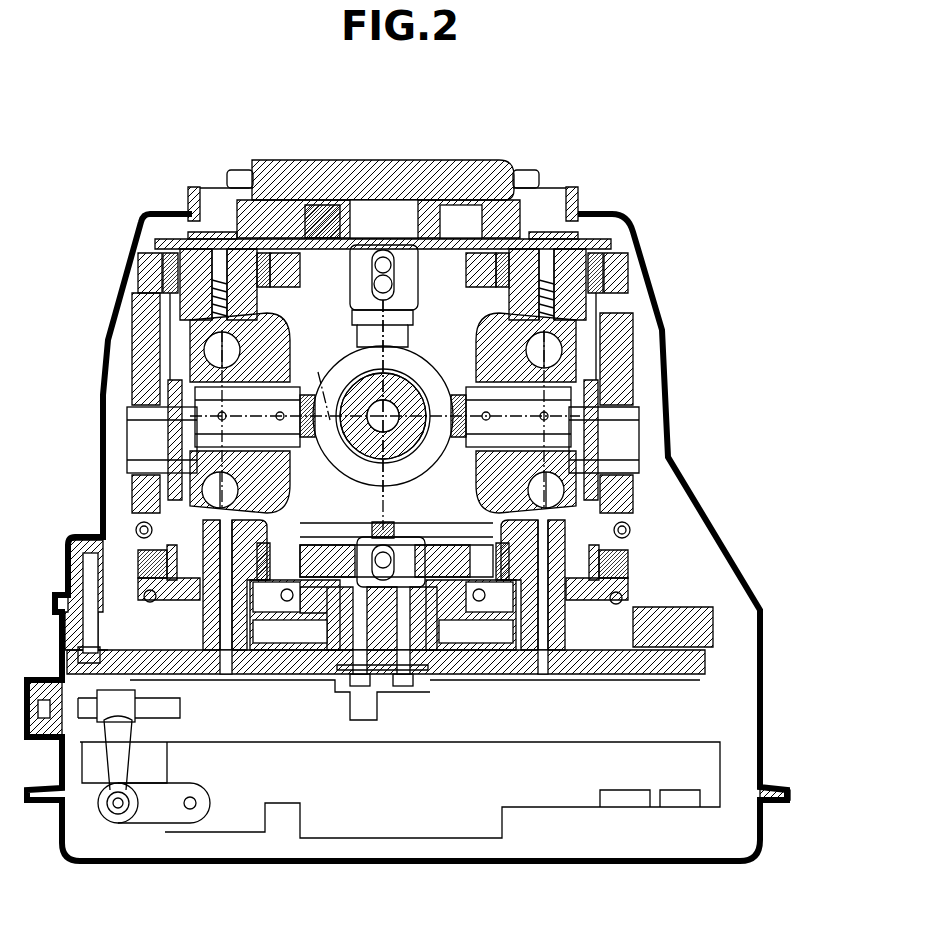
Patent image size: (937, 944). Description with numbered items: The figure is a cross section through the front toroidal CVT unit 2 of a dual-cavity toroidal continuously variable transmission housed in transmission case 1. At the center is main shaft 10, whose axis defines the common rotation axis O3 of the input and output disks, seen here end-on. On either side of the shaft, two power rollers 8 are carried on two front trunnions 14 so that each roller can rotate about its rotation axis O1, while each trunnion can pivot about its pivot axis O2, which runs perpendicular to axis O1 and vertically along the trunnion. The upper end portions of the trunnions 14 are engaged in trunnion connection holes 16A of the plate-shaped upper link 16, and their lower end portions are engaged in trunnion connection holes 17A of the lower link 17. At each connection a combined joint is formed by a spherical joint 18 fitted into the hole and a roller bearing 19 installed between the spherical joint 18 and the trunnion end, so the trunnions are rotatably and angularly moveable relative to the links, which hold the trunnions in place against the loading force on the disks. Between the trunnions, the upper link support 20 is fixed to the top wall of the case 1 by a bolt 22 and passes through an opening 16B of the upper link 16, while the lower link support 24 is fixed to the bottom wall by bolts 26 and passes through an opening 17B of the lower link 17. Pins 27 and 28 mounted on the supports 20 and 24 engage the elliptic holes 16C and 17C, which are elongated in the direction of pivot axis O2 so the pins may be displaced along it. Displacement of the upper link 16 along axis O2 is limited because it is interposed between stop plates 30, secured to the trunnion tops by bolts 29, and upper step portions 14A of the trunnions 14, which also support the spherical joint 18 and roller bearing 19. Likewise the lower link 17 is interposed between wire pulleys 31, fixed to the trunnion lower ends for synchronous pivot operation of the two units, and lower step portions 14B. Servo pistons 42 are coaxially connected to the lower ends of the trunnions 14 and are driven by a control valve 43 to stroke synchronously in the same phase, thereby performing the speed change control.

The transmission case 1 is at (122, 286).
The front toroidal CVT unit 2 is at (496, 234).
The power roller 8 is at (282, 318).
The main shaft 10 is at (340, 452).
The front trunnion 14 is at (125, 362).
The upper step portion 14A is at (150, 296).
The lower step portion 14B is at (150, 505).
The upper link 16 is at (138, 222).
The trunnion connection hole 16A is at (160, 214).
The opening 16B is at (335, 215).
The hole 16C is at (383, 258).
The lower link 17 is at (128, 577).
The trunnion connection hole 17A is at (135, 545).
The opening 17B is at (316, 528).
The hole 17C is at (348, 533).
The spherical joint 18 is at (150, 262).
The roller bearing 19 is at (178, 240).
The upper link support 20 is at (420, 302).
The bolt 22 is at (412, 338).
The lower link support 24 is at (305, 690).
The bolt 26 is at (402, 682).
The pin 27 is at (386, 262).
The pin 28 is at (386, 552).
The bolt 29 is at (215, 232).
The stop plate 30 is at (265, 232).
The wire pulley 31 is at (62, 633).
The servo piston 42 is at (152, 710).
The control valve 43 is at (370, 818).
The rotation axis O1 is at (320, 382).
The pivot axis O2 is at (284, 337).
The rotation axis O3 is at (416, 450).